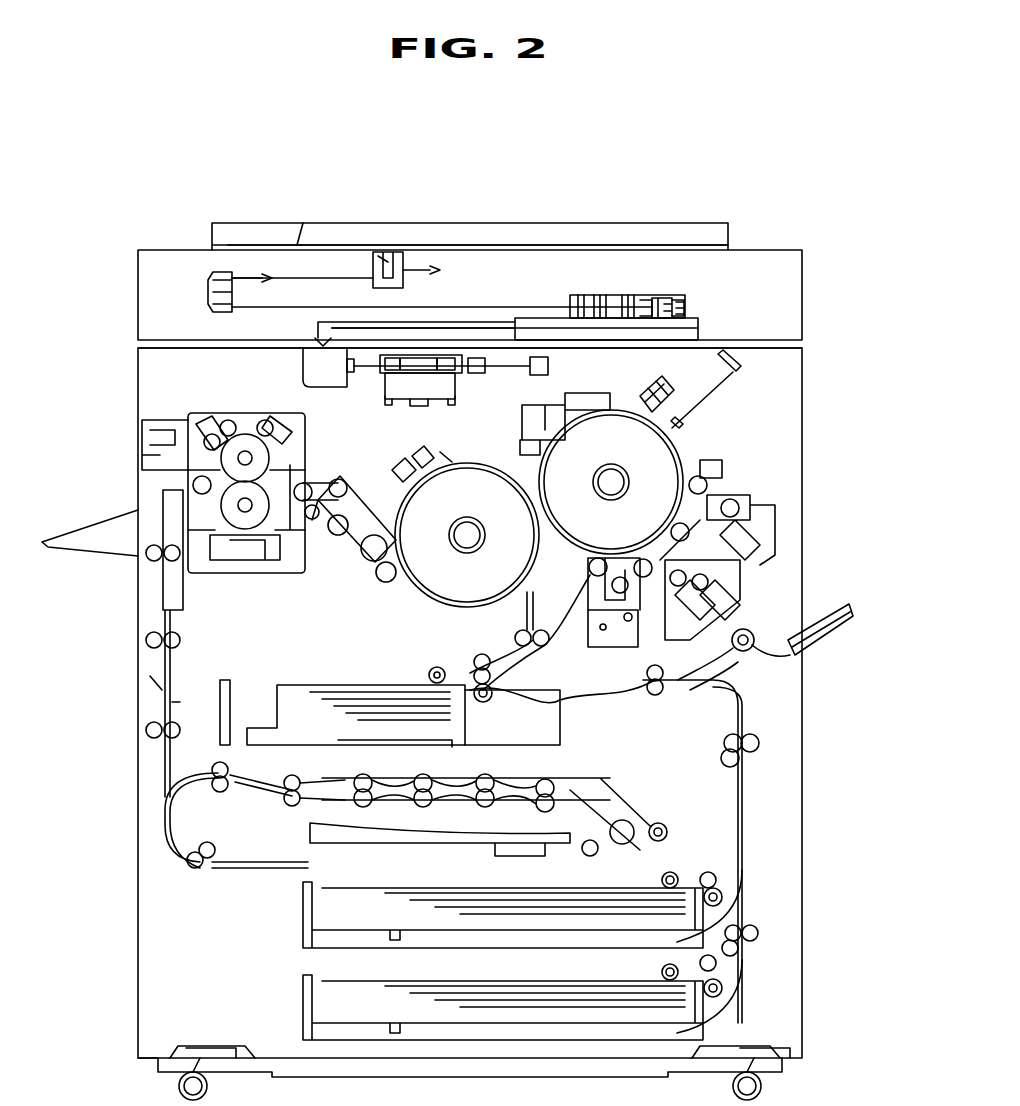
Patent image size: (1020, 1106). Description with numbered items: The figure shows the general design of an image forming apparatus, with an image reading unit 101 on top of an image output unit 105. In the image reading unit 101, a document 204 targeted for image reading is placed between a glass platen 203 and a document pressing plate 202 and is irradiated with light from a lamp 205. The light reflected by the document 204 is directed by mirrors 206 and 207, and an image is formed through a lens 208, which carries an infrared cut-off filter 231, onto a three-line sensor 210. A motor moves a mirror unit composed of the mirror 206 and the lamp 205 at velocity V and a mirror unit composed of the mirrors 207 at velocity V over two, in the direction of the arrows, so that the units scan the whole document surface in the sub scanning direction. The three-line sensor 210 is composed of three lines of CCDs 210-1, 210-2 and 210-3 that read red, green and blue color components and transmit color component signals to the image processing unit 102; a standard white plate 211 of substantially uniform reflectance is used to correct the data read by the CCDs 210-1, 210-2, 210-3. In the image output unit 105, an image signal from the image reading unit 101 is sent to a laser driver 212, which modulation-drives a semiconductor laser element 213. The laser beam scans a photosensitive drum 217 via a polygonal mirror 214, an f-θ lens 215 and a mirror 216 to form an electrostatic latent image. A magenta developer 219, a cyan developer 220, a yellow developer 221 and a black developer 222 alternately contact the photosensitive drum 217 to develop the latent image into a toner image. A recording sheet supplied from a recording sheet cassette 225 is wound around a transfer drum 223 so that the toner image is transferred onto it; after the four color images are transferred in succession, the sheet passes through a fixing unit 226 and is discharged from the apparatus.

The image reading unit 101 is at (882, 310).
The image processing unit 102 is at (698, 330).
The image output unit 105 is at (882, 570).
The document pressing plate 202 is at (541, 224).
The glass platen 203 is at (594, 293).
The document 204 is at (480, 246).
The lamp 205 is at (385, 288).
The mirror 206 is at (400, 276).
The mirrors 207 is at (216, 300).
The lens 208 is at (662, 298).
The three-line sensor 210 is at (684, 303).
The CCD 210-1 is at (684, 306).
The CCD 210-2 is at (684, 311).
The CCD 210-3 is at (684, 316).
The standard white plate 211 is at (255, 245).
The laser driver 212 is at (300, 369).
The semiconductor laser element 213 is at (351, 374).
The polygonal mirror 214 is at (452, 374).
The f-θ lens 215 is at (537, 376).
The mirror 216 is at (742, 370).
The photosensitive drum 217 is at (683, 457).
The magenta developer 219 is at (645, 577).
The cyan developer 220 is at (680, 532).
The yellow developer 221 is at (700, 484).
The black developer 222 is at (597, 576).
The transfer drum 223 is at (423, 602).
The recording sheet cassette 225 is at (758, 1056).
The fixing unit 226 is at (240, 576).
The infrared cut-off filter 231 is at (578, 294).